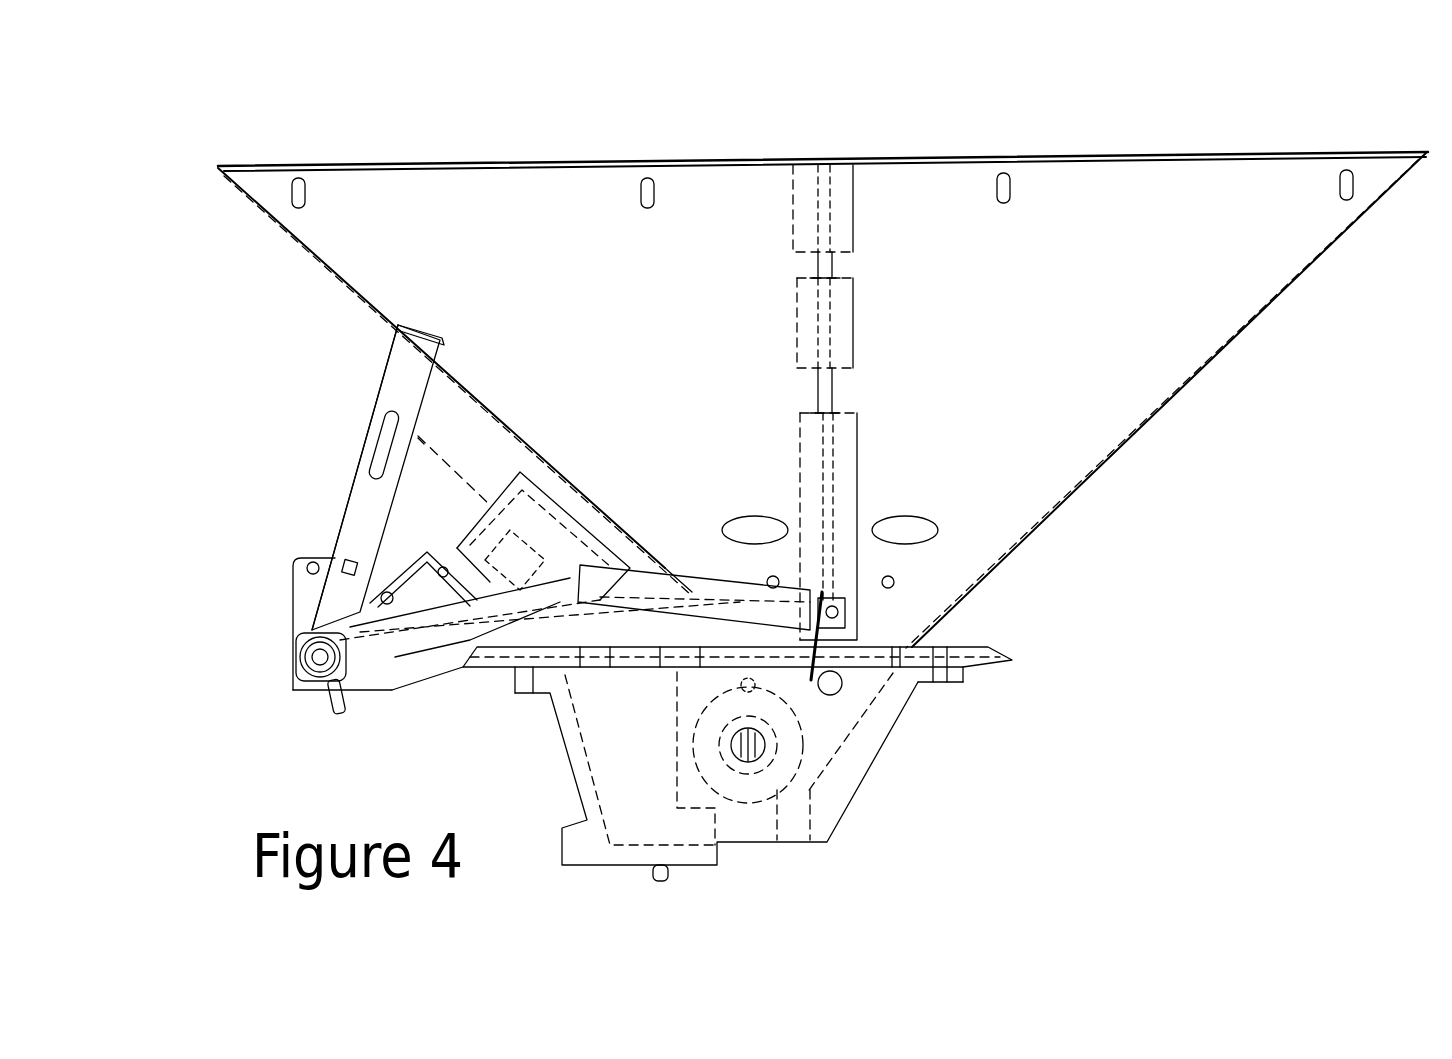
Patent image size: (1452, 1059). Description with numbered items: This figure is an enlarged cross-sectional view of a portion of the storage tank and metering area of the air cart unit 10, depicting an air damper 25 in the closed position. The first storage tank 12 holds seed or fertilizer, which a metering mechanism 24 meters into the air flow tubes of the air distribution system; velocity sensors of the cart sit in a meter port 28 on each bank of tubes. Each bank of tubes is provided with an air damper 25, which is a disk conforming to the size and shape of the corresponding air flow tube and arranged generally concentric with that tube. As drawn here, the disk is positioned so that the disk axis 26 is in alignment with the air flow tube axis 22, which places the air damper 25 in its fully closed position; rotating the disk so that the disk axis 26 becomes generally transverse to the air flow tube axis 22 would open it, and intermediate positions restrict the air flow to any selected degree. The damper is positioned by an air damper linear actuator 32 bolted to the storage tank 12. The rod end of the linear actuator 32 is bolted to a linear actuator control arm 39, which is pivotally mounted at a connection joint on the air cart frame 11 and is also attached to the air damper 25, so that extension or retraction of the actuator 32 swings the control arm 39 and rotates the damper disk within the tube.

The air cart unit 10 is at (1160, 645).
The air cart frame 11 is at (292, 654).
The first storage tank 12 is at (1076, 492).
The air flow tube axis 22 is at (423, 443).
The metering mechanism 24 is at (803, 767).
The air damper 25 is at (563, 476).
The disk axis 26 is at (458, 475).
The meter port 28 is at (802, 829).
The air damper linear actuator 32 is at (745, 678).
The linear actuator control arm 39 is at (400, 540).